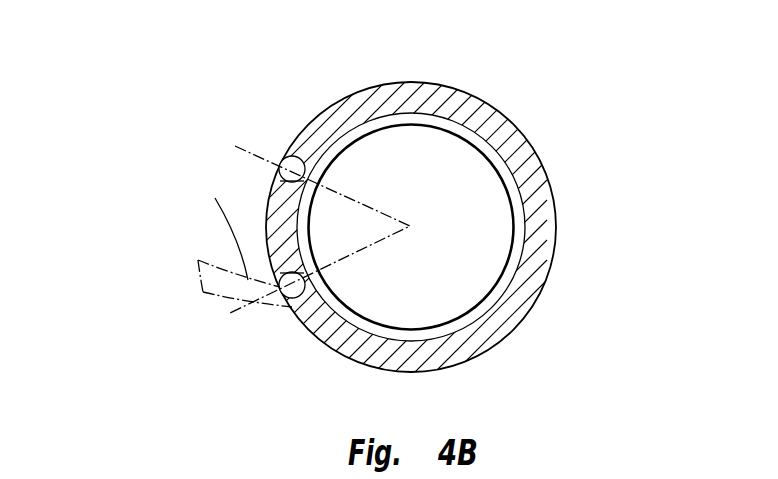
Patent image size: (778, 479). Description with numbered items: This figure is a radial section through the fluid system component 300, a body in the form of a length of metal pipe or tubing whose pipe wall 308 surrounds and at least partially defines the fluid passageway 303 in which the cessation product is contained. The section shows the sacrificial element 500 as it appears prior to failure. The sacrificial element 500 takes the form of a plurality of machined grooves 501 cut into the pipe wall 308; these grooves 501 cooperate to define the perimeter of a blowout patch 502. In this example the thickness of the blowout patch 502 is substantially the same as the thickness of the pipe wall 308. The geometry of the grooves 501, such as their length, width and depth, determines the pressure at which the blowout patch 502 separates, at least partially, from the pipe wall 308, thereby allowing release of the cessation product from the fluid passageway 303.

The fluid system component 300 is at (271, 89).
The pipe wall 308 is at (497, 138).
The fluid passageway 303 is at (478, 270).
The sacrificial element 500 is at (230, 169).
The machined grooves 501 is at (289, 157).
The blowout patch 502 is at (268, 224).